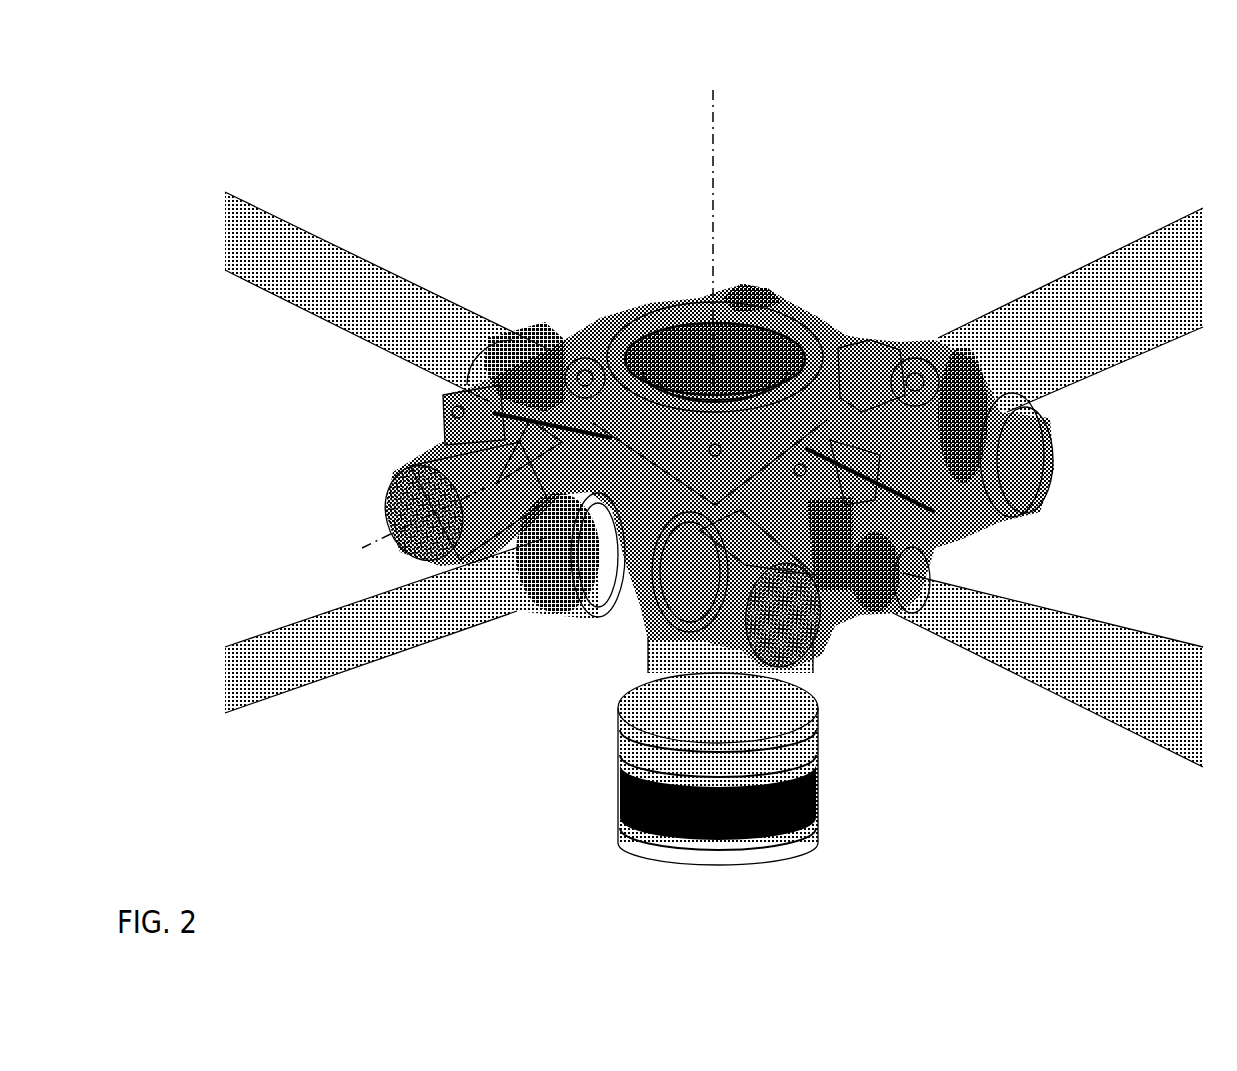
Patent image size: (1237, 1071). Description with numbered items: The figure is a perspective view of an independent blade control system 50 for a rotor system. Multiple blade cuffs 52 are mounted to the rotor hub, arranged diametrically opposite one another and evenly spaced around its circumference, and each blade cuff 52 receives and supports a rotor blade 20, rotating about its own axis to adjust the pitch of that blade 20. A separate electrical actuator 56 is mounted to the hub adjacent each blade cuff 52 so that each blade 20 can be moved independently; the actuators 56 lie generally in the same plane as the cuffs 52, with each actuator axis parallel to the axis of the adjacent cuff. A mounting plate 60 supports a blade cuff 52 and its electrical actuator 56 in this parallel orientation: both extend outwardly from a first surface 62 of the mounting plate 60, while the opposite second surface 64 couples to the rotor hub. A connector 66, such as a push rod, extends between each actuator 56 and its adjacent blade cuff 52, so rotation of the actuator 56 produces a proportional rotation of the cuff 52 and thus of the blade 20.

The rotor blade 20 is at (353, 277).
The independent blade control system 50 is at (1116, 166).
The blade cuff 52 is at (545, 352).
The electrical actuator 56 is at (405, 495).
The mounting plate 60 is at (583, 342).
The first surface 62 is at (1007, 503).
The second surface 64 is at (855, 345).
The connector 66 is at (445, 405).